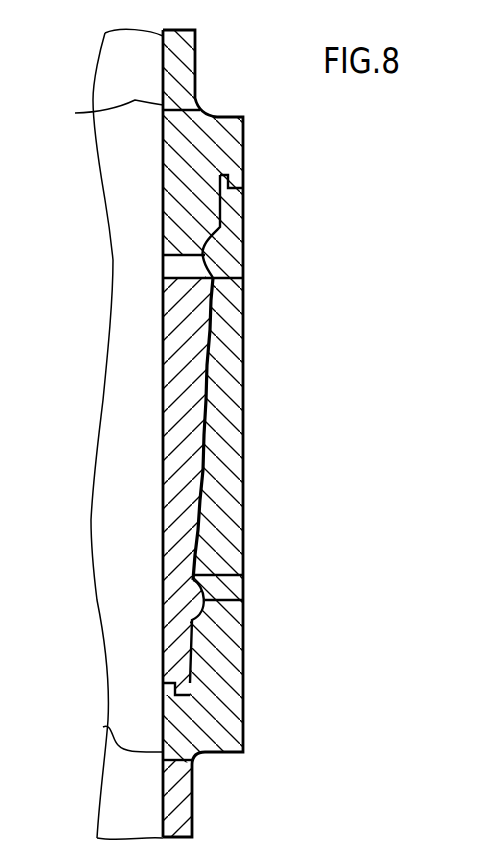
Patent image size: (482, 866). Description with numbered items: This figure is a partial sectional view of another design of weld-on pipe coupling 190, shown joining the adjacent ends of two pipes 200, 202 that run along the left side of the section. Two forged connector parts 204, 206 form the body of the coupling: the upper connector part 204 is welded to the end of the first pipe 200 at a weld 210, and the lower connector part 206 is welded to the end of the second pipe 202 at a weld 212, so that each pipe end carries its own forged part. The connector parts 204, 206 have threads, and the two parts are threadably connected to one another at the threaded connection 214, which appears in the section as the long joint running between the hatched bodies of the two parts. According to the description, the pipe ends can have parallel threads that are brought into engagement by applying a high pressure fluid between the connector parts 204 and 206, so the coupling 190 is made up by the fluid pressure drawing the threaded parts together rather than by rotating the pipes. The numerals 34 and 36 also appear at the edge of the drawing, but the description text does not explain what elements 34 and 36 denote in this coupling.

The weld-on pipe coupling 190 is at (268, 345).
The pipe 200 is at (188, 52).
The pipe 202 is at (182, 813).
The forged connector part 204 is at (237, 147).
The forged connector part 206 is at (233, 663).
The weld 210 is at (90, 111).
The weld 212 is at (115, 732).
The threaded connection 214 is at (205, 413).
The wall 34 is at (81, 293).
The wall 36 is at (81, 679).